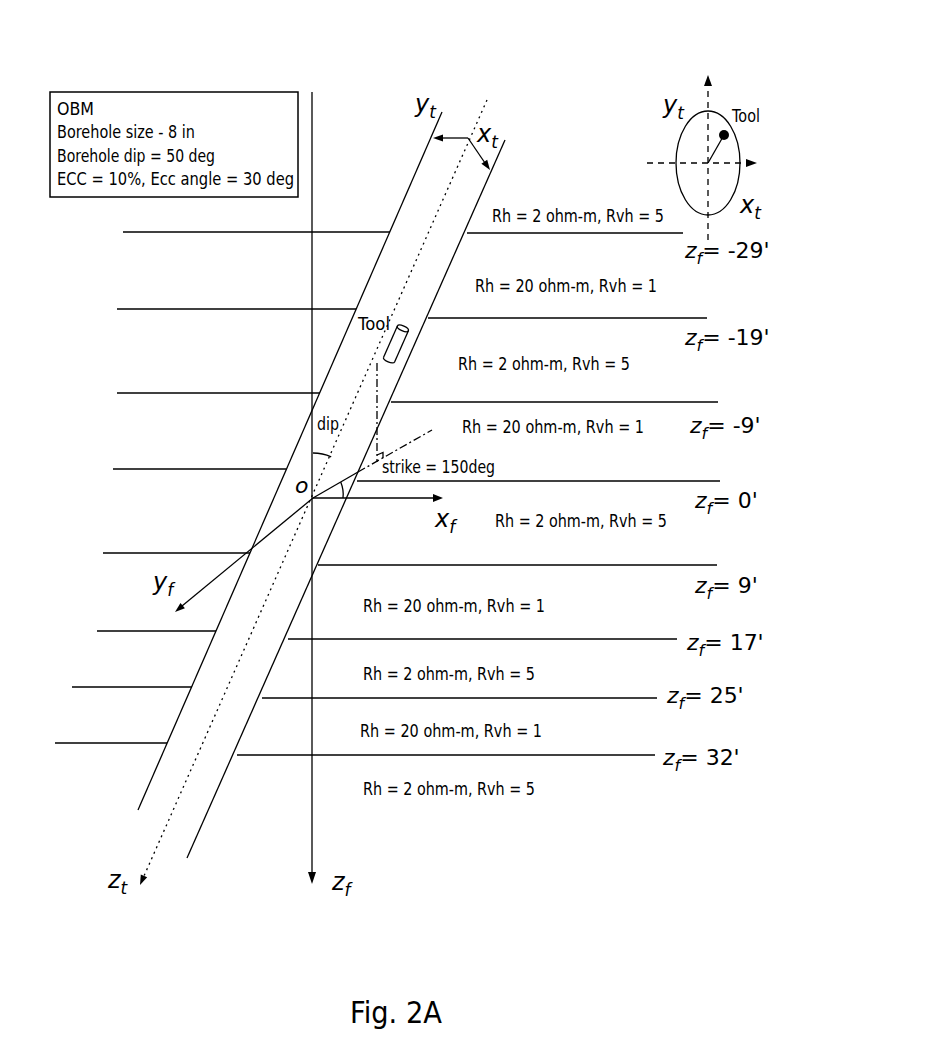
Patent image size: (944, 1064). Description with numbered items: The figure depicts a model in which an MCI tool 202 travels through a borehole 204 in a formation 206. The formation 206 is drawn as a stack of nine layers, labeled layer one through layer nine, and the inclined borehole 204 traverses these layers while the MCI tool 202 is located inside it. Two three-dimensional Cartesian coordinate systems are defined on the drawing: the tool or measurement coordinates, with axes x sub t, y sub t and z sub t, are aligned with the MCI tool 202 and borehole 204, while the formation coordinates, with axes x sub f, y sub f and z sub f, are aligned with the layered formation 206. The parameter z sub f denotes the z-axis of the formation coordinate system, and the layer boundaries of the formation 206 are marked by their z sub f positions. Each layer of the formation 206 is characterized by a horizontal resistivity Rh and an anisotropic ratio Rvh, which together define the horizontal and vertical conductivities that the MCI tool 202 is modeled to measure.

The MCI tool 202 is at (450, 237).
The borehole 204 is at (432, 138).
The formation 206 is at (173, 352).